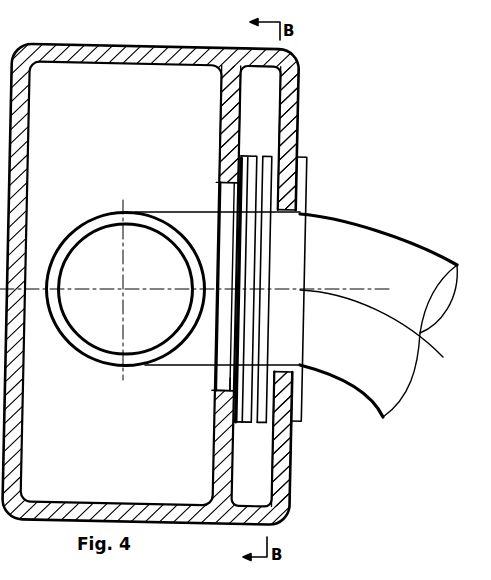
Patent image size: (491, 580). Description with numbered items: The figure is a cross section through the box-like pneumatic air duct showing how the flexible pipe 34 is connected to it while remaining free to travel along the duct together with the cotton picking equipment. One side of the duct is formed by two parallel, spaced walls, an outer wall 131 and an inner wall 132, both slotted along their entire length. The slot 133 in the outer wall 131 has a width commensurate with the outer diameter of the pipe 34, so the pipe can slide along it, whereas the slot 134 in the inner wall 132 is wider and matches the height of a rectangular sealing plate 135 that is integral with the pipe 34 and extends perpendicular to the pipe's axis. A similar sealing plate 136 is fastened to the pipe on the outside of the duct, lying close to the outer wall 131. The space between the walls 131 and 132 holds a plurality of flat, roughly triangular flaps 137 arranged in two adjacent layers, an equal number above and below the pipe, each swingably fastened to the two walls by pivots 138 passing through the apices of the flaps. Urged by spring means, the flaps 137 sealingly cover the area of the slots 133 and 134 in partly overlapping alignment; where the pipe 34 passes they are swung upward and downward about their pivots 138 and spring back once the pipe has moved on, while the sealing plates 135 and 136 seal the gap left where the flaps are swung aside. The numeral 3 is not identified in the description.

The housing 3 is at (40, 85).
The flexible pipe 34 is at (358, 226).
The outer wall 131 is at (291, 137).
The inner wall 132 is at (229, 112).
The slot 133 is at (298, 213).
The slot 134 is at (240, 182).
The sealing plate 135 is at (222, 378).
The sealing plate 136 is at (296, 385).
The flat flaps 137 is at (270, 427).
The pivots 138 is at (262, 168).